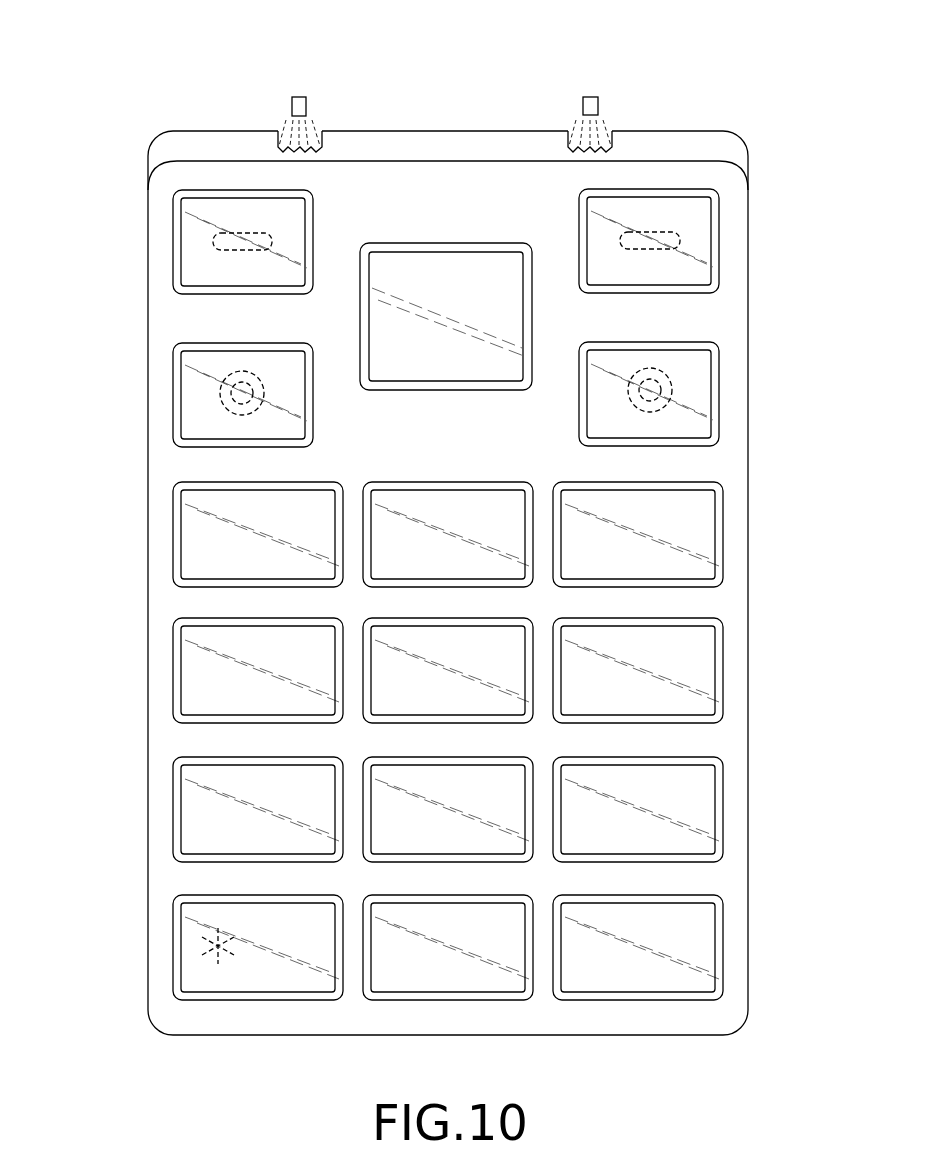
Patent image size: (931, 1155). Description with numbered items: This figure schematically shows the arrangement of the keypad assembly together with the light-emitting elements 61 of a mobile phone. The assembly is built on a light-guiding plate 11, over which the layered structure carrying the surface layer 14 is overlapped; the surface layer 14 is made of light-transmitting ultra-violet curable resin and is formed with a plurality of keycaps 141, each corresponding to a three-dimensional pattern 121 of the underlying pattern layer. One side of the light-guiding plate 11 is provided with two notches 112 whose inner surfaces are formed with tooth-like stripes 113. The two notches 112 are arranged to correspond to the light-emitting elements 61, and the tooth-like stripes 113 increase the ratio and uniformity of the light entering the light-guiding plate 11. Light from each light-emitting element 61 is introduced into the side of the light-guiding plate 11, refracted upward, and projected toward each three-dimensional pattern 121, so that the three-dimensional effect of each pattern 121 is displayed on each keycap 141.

The light-guiding plate 11 is at (208, 140).
The light-emitting element 61 is at (591, 96).
The notch 112 is at (604, 132).
The tooth-like stripes 113 is at (565, 158).
The surface layer 14 is at (439, 594).
The keycap 141 is at (708, 683).
The three-dimensional pattern 121 is at (596, 690).